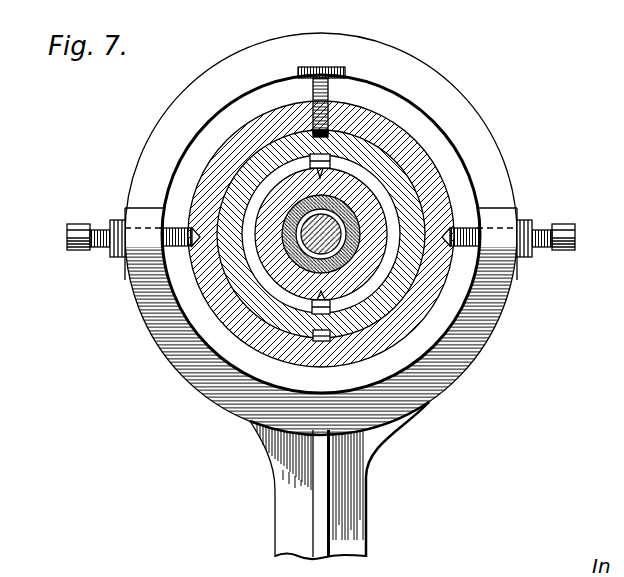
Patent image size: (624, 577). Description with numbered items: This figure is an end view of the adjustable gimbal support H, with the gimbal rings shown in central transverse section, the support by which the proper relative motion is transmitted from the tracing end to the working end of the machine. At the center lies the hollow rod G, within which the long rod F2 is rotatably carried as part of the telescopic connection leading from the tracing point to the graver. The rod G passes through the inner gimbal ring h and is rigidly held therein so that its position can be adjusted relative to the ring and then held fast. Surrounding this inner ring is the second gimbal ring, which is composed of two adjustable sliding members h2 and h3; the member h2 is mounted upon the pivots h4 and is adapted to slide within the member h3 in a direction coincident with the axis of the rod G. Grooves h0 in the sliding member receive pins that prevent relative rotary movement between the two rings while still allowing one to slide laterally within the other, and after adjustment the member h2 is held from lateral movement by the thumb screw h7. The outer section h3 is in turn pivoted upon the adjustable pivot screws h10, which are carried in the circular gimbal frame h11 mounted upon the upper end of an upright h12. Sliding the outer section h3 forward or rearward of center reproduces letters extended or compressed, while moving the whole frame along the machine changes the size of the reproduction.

The adjustable gimbal support H is at (321, 234).
The circular gimbal frame h11 is at (412, 72).
The thumb screw h7 is at (313, 102).
The outer section of the outer gimbal ring h3 is at (418, 141).
The sliding member of the outer gimbal ring h2 is at (408, 190).
The pivots h4 is at (369, 332).
The adjustable pivot screws h10 is at (542, 247).
The inner gimbal ring h is at (343, 257).
The hollow rod G is at (283, 240).
The rod F2 is at (272, 281).
The grooves h0 is at (285, 360).
The upright h12 is at (353, 507).